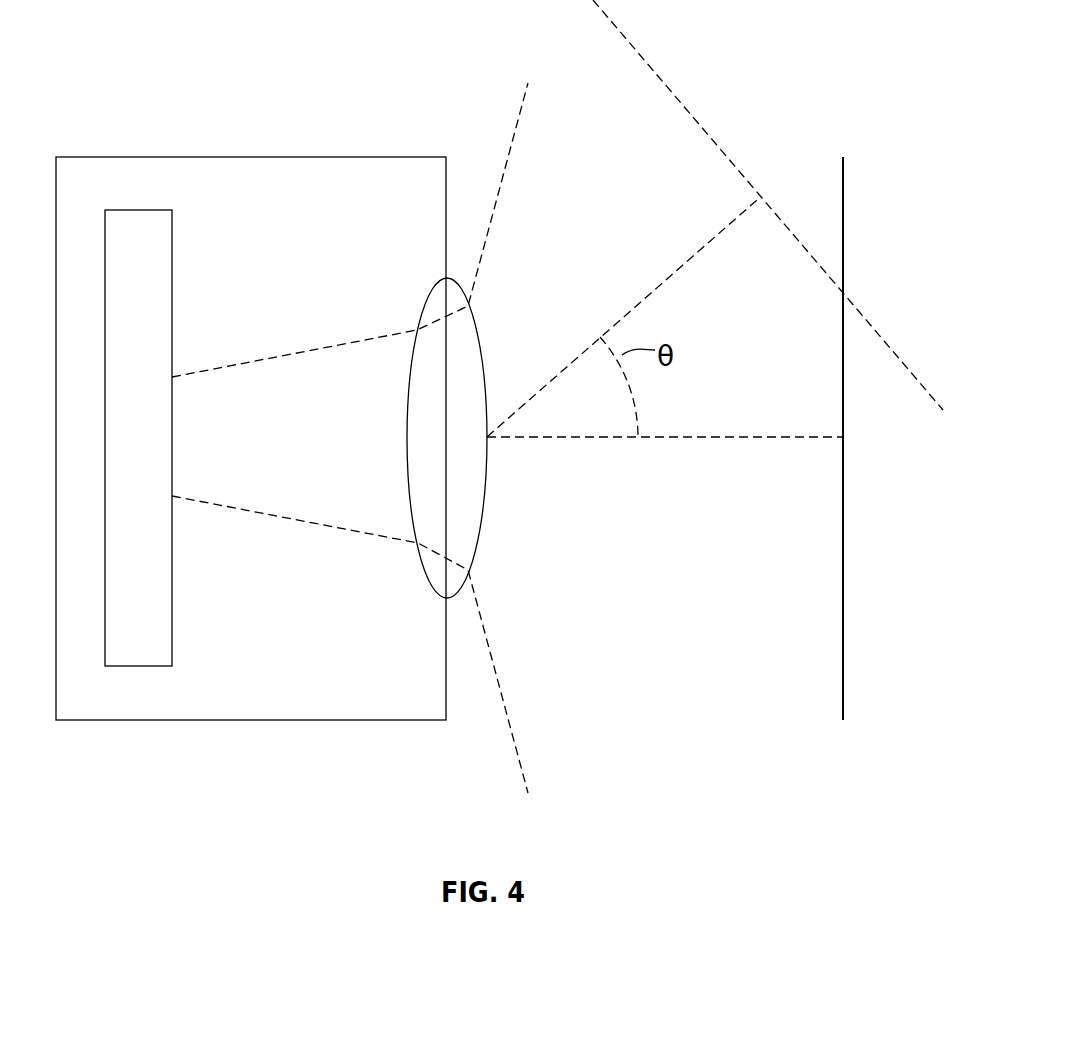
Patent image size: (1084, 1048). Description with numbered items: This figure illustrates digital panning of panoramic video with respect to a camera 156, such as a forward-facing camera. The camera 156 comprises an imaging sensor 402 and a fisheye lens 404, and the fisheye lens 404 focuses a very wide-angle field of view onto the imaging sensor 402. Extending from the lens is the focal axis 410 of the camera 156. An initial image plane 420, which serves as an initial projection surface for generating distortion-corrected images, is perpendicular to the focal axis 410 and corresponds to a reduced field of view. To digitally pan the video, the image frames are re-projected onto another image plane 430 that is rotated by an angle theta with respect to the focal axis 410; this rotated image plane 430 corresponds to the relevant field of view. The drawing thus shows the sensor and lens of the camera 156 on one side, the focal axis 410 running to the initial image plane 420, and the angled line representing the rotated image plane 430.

The camera 156 is at (125, 156).
The imaging sensor 402 is at (172, 595).
The fisheye lens 404 is at (478, 528).
The focal axis 410 is at (755, 440).
The initial image plane 420 is at (843, 630).
The image plane 430 is at (682, 105).